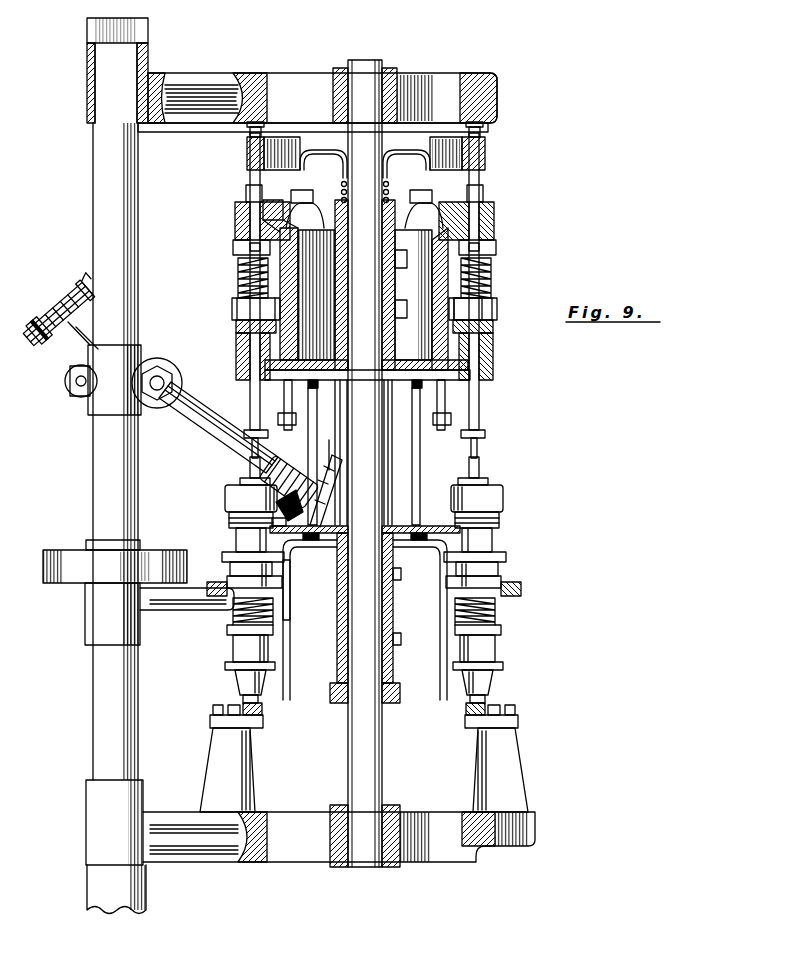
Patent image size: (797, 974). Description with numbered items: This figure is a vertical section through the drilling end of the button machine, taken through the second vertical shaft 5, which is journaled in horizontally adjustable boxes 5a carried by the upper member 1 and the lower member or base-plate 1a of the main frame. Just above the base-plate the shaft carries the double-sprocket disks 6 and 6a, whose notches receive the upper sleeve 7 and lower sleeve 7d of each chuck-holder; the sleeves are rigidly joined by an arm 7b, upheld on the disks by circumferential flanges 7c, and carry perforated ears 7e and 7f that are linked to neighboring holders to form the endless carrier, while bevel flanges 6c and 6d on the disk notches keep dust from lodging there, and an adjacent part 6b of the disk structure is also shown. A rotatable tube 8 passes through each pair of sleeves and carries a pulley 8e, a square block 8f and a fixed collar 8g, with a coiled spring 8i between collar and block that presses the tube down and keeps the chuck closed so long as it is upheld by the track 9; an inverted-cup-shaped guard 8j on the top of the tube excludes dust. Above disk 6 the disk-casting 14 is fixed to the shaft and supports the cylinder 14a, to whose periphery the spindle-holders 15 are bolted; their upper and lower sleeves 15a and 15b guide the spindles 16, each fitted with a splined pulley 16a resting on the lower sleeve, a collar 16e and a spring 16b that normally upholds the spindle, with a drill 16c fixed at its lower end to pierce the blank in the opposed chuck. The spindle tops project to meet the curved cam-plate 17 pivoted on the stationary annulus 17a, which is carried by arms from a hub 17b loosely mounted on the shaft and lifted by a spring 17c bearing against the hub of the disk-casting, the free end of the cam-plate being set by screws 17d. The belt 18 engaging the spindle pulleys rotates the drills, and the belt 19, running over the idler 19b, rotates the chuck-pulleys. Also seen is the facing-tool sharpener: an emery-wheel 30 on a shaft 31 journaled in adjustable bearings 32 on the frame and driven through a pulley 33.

The upper member of the main frame 1 is at (216, 80).
The lower member or base-plate of the main frame 1a is at (250, 862).
The second vertical shaft 5 is at (383, 737).
The boxes 5a is at (398, 72).
The upper double-sprocket disk 6 is at (392, 520).
The lower double-sprocket disk 6a is at (432, 692).
The bracket frame 6b is at (312, 538).
The bevel flange 6c is at (300, 520).
The bevel flange 6d is at (264, 706).
The upper sleeve 7 is at (236, 540).
The arm 7b is at (300, 570).
The circumferential flanges 7c is at (230, 520).
The lower sleeve 7d is at (234, 650).
The perforated ear 7e is at (262, 568).
The perforated ear 7f is at (236, 684).
The rotatable tube 8 is at (246, 478).
The pulley 8e is at (222, 556).
The square block 8f is at (232, 600).
The collar 8g is at (275, 632).
The coiled spring 8i is at (275, 617).
The inverted-cup-shaped guard 8j is at (226, 496).
The track 9 is at (264, 720).
The disk-casting 14 is at (366, 357).
The cylinder 14a is at (468, 309).
The spindle-holder 15 is at (240, 285).
The upper sleeve of spindle-holder 15a is at (236, 212).
The lower sleeve of spindle-holder 15b is at (237, 366).
The spindle 16 is at (250, 397).
The pulley 16a is at (238, 325).
The spring 16b is at (236, 250).
The drill 16c is at (256, 434).
The collar 16e is at (247, 245).
The curved cam-plate 17 is at (247, 155).
The stationary annulus 17a is at (250, 132).
The hub 17b is at (395, 145).
The spring 17c is at (392, 189).
The screws 17d is at (478, 124).
The belt 18 is at (234, 310).
The belt 19 is at (80, 570).
The idler 19b is at (50, 555).
The emery-wheel 30 is at (330, 465).
The shaft 31 is at (46, 308).
The adjustable bearings 32 is at (100, 402).
The pulley 33 is at (70, 280).